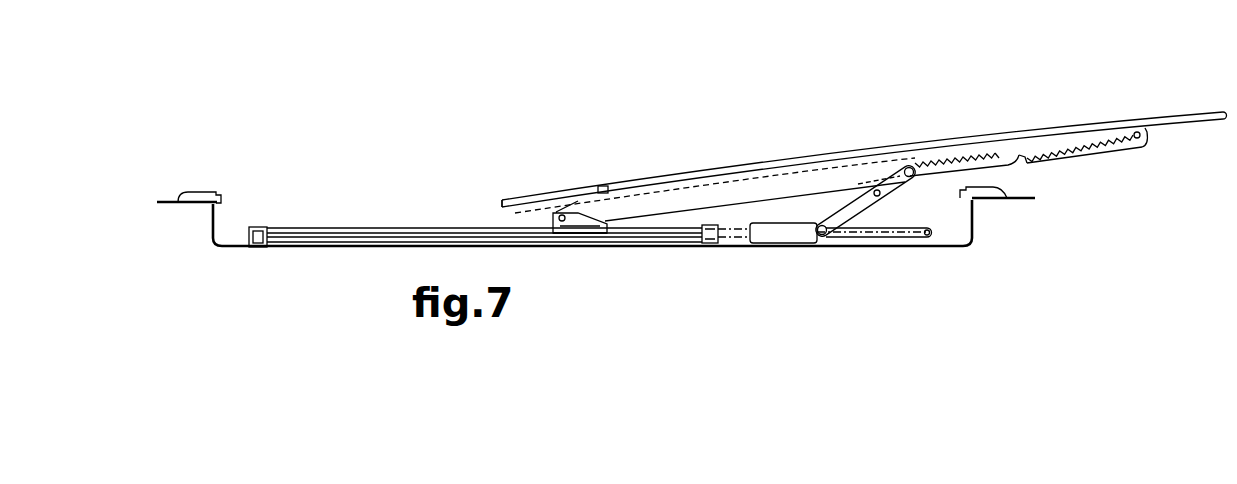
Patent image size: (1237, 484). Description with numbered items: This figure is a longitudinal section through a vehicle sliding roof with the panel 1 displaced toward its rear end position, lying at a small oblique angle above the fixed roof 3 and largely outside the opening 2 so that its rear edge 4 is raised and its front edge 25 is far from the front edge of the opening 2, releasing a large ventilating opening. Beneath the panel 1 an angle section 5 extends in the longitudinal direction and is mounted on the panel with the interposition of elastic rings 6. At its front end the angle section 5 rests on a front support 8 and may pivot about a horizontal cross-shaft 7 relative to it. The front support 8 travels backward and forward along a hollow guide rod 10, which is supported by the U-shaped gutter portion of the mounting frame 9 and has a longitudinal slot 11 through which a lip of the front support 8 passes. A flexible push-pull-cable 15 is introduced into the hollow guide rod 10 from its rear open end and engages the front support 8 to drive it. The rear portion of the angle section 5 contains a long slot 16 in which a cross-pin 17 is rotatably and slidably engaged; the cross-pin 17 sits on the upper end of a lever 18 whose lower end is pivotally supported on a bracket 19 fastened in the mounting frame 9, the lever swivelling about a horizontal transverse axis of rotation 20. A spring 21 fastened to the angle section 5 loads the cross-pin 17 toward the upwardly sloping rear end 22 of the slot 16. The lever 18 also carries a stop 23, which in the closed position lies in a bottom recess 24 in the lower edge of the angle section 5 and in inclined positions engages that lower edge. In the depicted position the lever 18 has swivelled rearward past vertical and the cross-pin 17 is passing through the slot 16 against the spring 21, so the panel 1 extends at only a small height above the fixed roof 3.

The panel 1 is at (525, 198).
The opening 2 is at (323, 205).
The fixed roof 3 is at (172, 200).
The rear edge 4 is at (1227, 110).
The angle section 5 is at (673, 197).
The elastic rings 6 is at (607, 188).
The horizontal cross-shaft 7 is at (557, 212).
The front support 8 is at (577, 219).
The mounting frame 9 is at (225, 250).
The hollow guide rod 10 is at (687, 234).
The longitudinal slot 11 is at (331, 237).
The flexible push-pull-cable 15 is at (737, 236).
The slot 16 is at (950, 163).
The cross-pin 17 is at (906, 167).
The lever 18 is at (858, 207).
The bracket 19 is at (790, 229).
The axis of rotation 20 is at (823, 238).
The spring 21 is at (1078, 140).
The rear end of the slot 22 is at (992, 153).
The stop 23 is at (883, 195).
The bottom recess 24 is at (1025, 157).
The front edge 25 is at (502, 204).